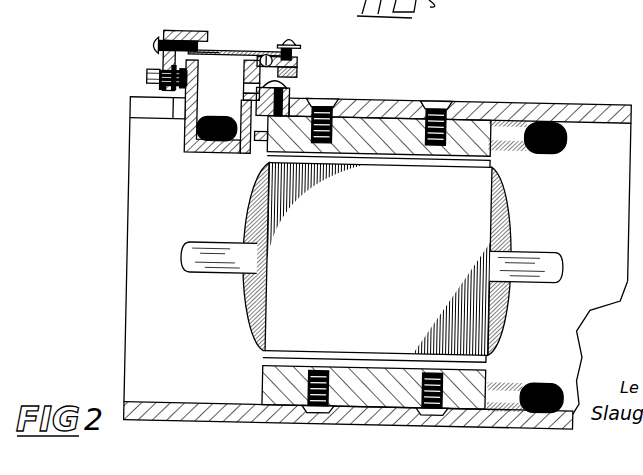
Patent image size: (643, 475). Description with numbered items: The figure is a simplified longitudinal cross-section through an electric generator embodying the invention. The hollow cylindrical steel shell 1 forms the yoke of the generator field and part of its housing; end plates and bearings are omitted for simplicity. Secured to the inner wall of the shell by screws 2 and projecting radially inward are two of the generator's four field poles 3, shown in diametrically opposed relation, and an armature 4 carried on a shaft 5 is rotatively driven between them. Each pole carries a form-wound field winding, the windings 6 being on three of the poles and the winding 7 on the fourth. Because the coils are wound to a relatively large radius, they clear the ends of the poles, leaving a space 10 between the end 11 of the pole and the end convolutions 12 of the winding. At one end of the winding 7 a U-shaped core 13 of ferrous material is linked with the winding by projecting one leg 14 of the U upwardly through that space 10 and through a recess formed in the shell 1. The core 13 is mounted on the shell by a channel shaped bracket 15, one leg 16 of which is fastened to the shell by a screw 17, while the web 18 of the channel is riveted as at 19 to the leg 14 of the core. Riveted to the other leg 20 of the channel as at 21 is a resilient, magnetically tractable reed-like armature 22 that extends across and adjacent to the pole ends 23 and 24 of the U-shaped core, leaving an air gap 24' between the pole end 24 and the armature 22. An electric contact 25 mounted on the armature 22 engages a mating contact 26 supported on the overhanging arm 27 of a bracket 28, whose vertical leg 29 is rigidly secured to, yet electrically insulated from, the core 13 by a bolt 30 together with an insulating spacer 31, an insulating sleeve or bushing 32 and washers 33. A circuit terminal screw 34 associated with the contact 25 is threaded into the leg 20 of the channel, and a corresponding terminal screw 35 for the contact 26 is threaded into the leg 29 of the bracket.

The hollow cylindrical steel shell 1 is at (587, 106).
The screws 2 is at (332, 101).
The field poles 3 is at (478, 128).
The armature 4 is at (470, 230).
The shaft 5 is at (536, 250).
The windings 6 is at (535, 380).
The winding 7 is at (529, 150).
The space 10 is at (248, 156).
The end of the pole 11 is at (256, 144).
The end convolutions of the windings 12 is at (215, 157).
The U-shaped core 13 is at (187, 157).
The leg of the U-shaped core 14 is at (240, 97).
The channel shaped bracket 15 is at (259, 57).
The leg of the channel bracket 16 is at (290, 99).
The screw 17 is at (280, 90).
The web of the channel 18 is at (260, 87).
The rivets 19 is at (240, 88).
The other leg of the channel 20 is at (293, 65).
The rivets 21 is at (280, 40).
The reed-like armature 22 is at (208, 55).
The pole end of the U-shaped core 23 is at (243, 62).
The pole end of the U-shaped core 24 is at (200, 81).
The air gap 24' is at (179, 63).
The electric contact 25 is at (196, 56).
The mating contact 26 is at (192, 34).
The overhanging arm 27 is at (162, 34).
The bracket 28 is at (152, 42).
The vertical leg of the bracket 29 is at (160, 67).
The bolt 30 is at (146, 81).
The insulating spacer 31 is at (157, 108).
The insulating sleeve or bushing 32 is at (178, 88).
The washers 33 is at (158, 90).
The terminal screw 34 is at (283, 36).
The terminal screw 35 is at (146, 48).